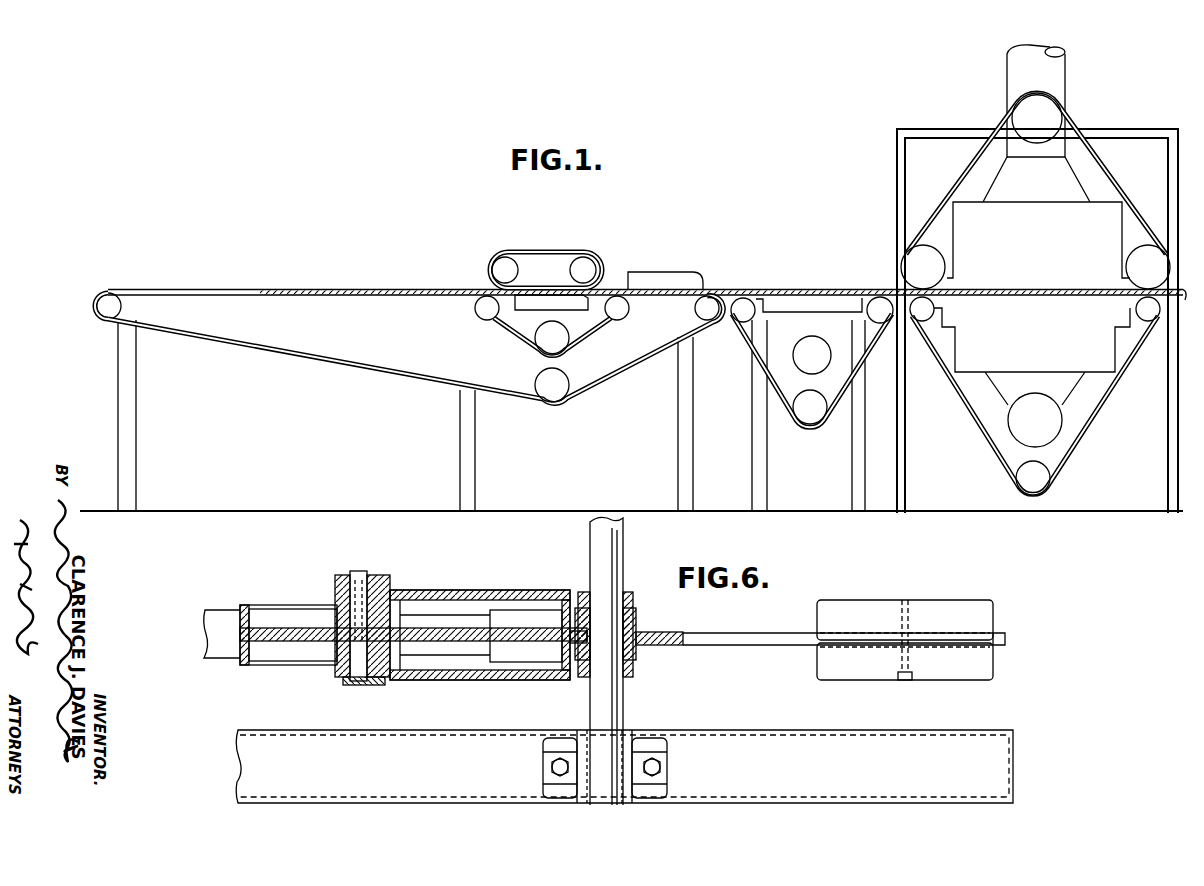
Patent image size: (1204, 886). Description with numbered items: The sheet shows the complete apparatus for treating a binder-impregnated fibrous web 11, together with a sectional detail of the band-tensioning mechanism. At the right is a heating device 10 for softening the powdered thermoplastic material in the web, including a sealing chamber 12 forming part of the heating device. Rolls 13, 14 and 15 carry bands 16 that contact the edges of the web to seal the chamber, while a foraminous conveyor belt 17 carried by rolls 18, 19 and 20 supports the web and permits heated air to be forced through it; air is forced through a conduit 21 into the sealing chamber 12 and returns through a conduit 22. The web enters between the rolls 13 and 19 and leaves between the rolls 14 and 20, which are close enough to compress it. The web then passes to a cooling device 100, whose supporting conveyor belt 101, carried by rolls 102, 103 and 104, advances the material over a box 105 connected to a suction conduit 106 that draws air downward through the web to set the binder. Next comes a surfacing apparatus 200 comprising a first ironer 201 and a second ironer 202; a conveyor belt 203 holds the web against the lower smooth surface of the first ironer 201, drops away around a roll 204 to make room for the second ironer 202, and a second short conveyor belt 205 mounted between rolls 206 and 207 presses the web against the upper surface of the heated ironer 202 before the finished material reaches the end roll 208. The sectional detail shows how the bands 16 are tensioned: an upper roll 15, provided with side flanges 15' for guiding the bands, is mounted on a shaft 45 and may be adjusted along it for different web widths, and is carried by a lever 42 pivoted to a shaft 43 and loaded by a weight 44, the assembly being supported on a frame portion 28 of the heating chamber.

In FIG. 1, the heating device 10 is at (1037, 279).
In FIG. 1, the web 11 is at (727, 289).
In FIG. 1, the sealing chamber 12 is at (1100, 202).
In FIG. 1, the roll 13 is at (1141, 247).
In FIG. 1, the roll 14 is at (928, 247).
In FIG. 1, the upper roll 15 is at (1052, 117).
In FIG. 6, the upper roll 15 is at (413, 665).
In FIG. 6, the side flange 15' is at (282, 647).
In FIG. 1, the band 16 is at (1115, 186).
In FIG. 6, the band 16 is at (211, 658).
In FIG. 1, the foraminous conveyor belt 17 is at (1092, 432).
In FIG. 1, the roll 18 is at (1041, 472).
In FIG. 1, the roll 19 is at (1135, 307).
In FIG. 1, the roll 20 is at (936, 306).
In FIG. 1, the conduit 21 is at (1063, 86).
In FIG. 1, the conduit 22 is at (1017, 434).
In FIG. 6, the frame portion 28 is at (903, 730).
In FIG. 6, the lever 42 is at (752, 633).
In FIG. 6, the shaft 43 is at (623, 576).
In FIG. 6, the weight 44 is at (880, 600).
In FIG. 6, the shaft 45 is at (358, 576).
In FIG. 1, the cooling device 100 is at (803, 362).
In FIG. 1, the supporting conveyor belt 101 is at (863, 366).
In FIG. 1, the roll 102 is at (818, 400).
In FIG. 1, the roll 103 is at (872, 315).
In FIG. 1, the roll 104 is at (757, 312).
In FIG. 1, the box 105 is at (780, 313).
In FIG. 1, the suction conduit 106 is at (798, 362).
In FIG. 1, the surfacing apparatus 200 is at (378, 316).
In FIG. 1, the first ironer 201 is at (666, 272).
In FIG. 1, the second ironer 202 is at (563, 302).
In FIG. 1, the conveyor belt 203 is at (613, 372).
In FIG. 1, the roll 204 is at (541, 343).
In FIG. 1, the second short conveyor belt 205 is at (568, 247).
In FIG. 1, the roll 206 is at (517, 277).
In FIG. 1, the roll 207 is at (577, 278).
In FIG. 1, the end roll 208 is at (96, 309).